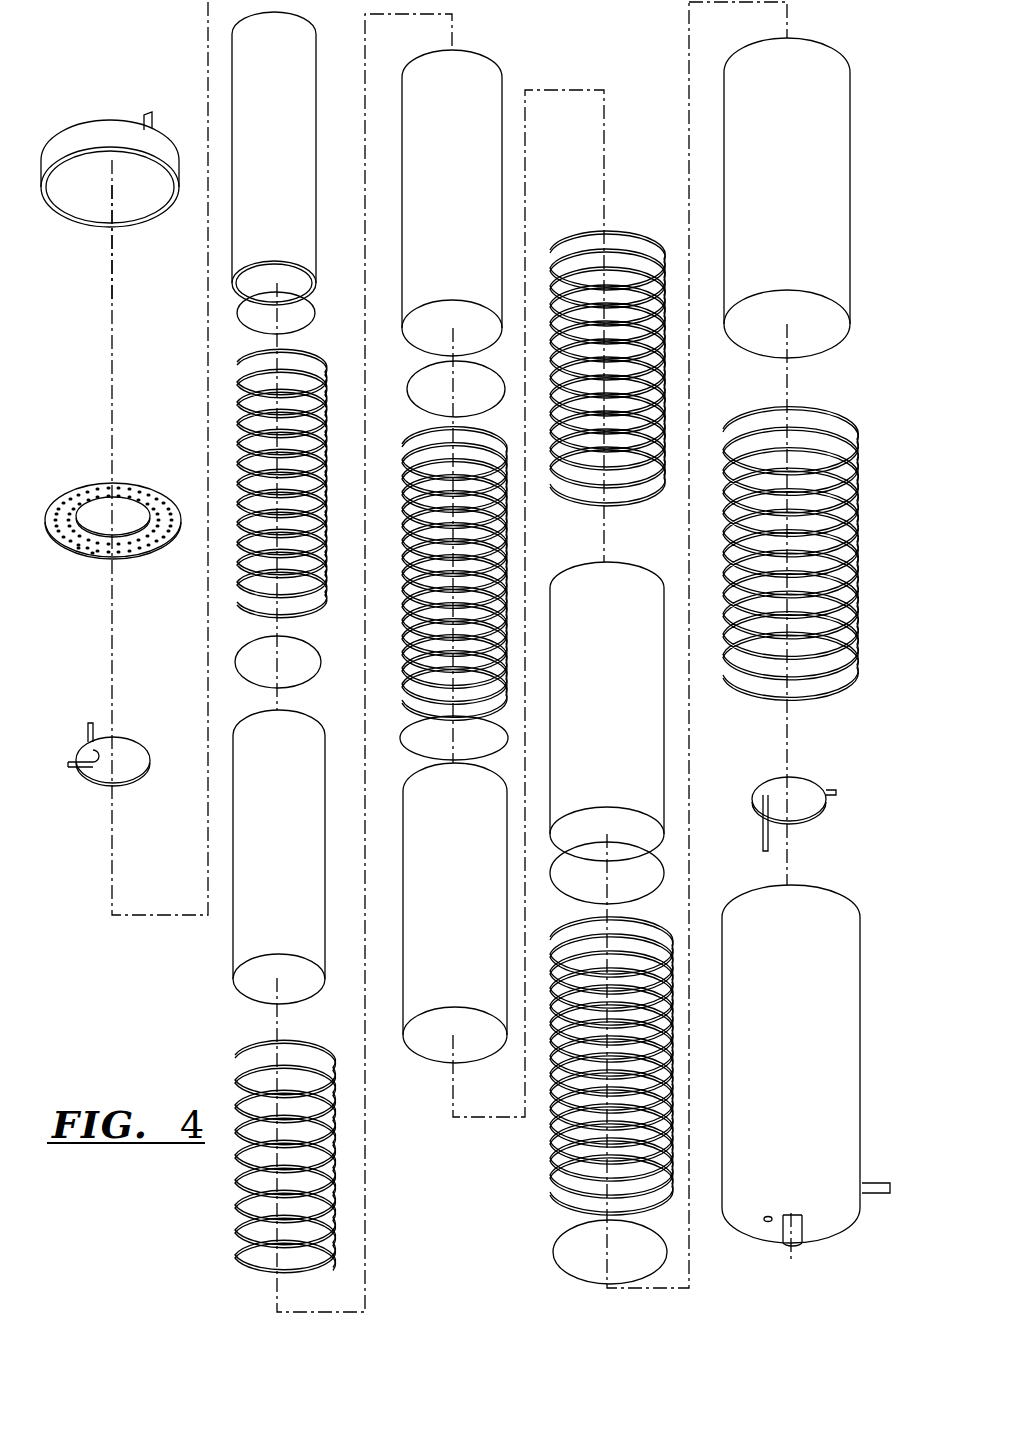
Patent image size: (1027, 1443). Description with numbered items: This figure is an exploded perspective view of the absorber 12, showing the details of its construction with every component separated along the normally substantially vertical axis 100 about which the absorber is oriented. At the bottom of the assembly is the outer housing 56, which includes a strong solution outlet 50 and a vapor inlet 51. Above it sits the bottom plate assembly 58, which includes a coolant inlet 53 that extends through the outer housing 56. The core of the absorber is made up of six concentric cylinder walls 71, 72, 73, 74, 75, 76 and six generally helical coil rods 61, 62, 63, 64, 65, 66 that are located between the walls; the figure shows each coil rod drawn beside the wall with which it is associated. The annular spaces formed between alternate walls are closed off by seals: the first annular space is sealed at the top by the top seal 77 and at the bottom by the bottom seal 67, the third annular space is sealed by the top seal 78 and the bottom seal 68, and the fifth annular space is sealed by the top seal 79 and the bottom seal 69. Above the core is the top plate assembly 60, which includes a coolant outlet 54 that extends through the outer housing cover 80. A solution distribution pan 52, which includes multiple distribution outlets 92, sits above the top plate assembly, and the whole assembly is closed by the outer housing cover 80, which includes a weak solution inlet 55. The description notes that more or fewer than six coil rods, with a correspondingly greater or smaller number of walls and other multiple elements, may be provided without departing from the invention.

The absorber 12 is at (94, 84).
The outer housing cover 80 is at (82, 131).
The weak solution inlet 55 is at (150, 115).
The vertical axis 100 is at (113, 303).
The solution distribution pan 52 is at (131, 486).
The distribution outlets 92 is at (91, 555).
The coolant outlet 54 is at (95, 723).
The top plate assembly 60 is at (124, 770).
The cylinder wall 71 is at (297, 55).
The top seal 77 is at (238, 318).
The helical coil rod 61 is at (314, 355).
The bottom seal 67 is at (313, 681).
The cylinder wall 72 is at (300, 796).
The helical coil rod 62 is at (290, 1043).
The cylinder wall 73 is at (470, 64).
The top seal 78 is at (416, 385).
The helical coil rod 63 is at (474, 438).
The bottom seal 68 is at (410, 753).
The cylinder wall 74 is at (418, 845).
The helical coil rod 64 is at (614, 229).
The cylinder wall 75 is at (586, 582).
The top seal 79 is at (650, 900).
The helical coil rod 65 is at (551, 1112).
The bottom seal 69 is at (556, 1250).
The cylinder wall 76 is at (751, 64).
The helical coil rod 66 is at (780, 404).
The coolant inlet 53 is at (763, 835).
The bottom plate assembly 58 is at (793, 810).
The outer housing 56 is at (765, 1173).
The vapor inlet 51 is at (870, 1194).
The strong solution outlet 50 is at (795, 1245).